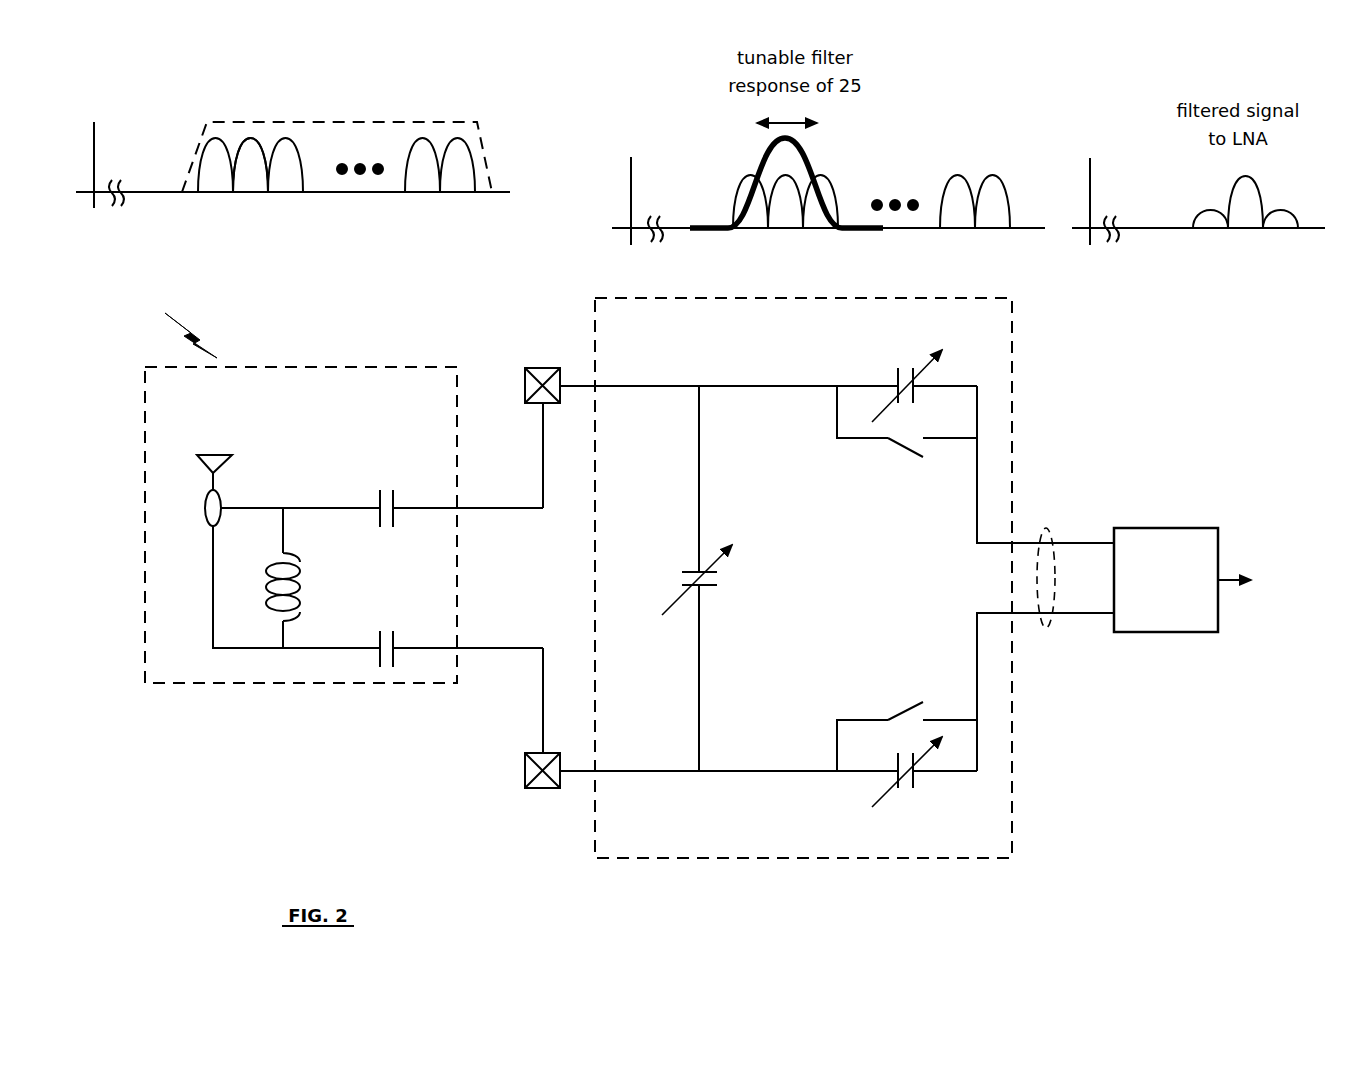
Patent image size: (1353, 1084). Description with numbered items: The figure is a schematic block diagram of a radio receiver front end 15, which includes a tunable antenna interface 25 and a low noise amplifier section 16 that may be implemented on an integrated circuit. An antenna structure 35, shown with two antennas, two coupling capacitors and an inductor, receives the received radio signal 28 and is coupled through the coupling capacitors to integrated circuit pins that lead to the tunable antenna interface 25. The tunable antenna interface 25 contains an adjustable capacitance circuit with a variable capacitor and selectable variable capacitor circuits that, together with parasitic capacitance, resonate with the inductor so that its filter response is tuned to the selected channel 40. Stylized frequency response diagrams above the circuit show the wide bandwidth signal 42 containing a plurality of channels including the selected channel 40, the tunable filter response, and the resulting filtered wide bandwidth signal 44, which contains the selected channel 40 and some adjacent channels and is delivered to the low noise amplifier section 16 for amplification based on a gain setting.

The front end 15 is at (384, 956).
The low noise amplifier section 16 is at (1182, 580).
The tunable antenna interface 25 is at (837, 578).
The received radio signal 28 is at (180, 307).
The antenna structure 35 is at (344, 525).
The selected channel 40 is at (250, 135).
The wide bandwidth signal 42 is at (457, 119).
The filtered wide bandwidth signal 44 is at (1046, 628).